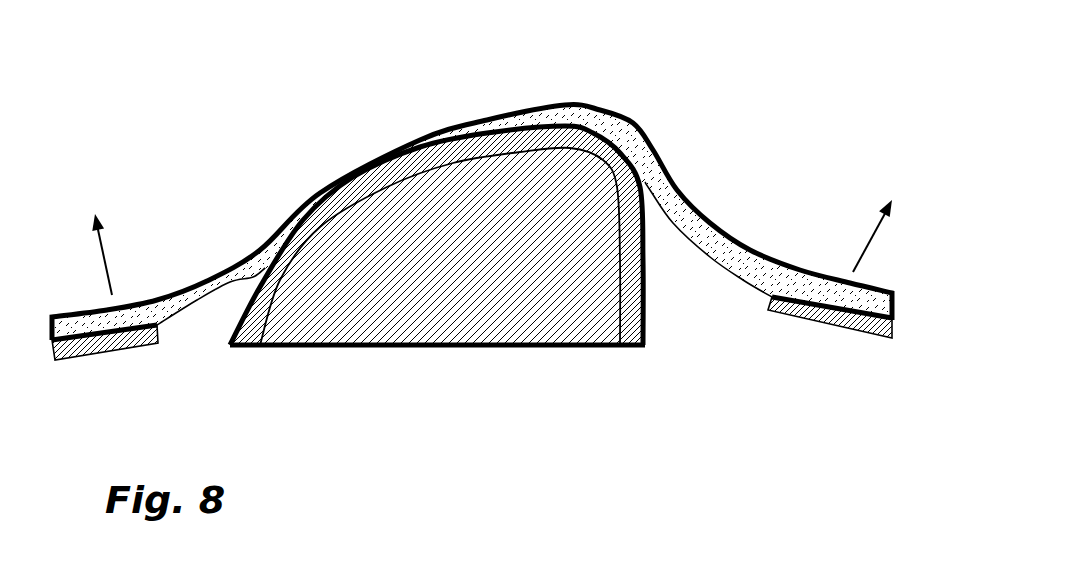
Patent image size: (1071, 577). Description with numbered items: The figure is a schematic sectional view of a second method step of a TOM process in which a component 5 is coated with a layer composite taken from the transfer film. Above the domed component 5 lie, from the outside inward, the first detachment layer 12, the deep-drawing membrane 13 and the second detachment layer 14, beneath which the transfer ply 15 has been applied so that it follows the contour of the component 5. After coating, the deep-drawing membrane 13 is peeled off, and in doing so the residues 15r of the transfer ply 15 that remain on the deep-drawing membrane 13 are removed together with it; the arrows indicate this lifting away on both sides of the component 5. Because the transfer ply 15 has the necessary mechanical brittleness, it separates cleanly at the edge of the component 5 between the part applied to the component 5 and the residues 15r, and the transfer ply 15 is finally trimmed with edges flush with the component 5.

The component 5 is at (485, 333).
The first detachment layer 12 is at (437, 127).
The deep-drawing membrane 13 is at (537, 120).
The second detachment layer 14 is at (625, 140).
The transfer ply 15 is at (640, 277).
The residues 15r is at (117, 347).